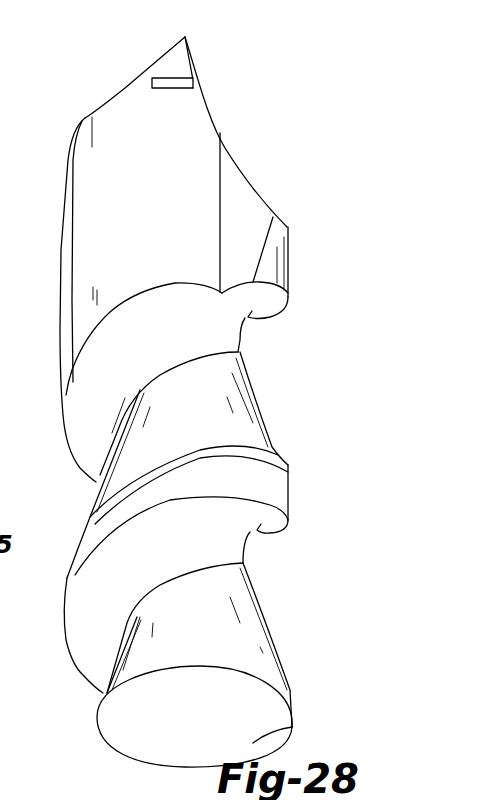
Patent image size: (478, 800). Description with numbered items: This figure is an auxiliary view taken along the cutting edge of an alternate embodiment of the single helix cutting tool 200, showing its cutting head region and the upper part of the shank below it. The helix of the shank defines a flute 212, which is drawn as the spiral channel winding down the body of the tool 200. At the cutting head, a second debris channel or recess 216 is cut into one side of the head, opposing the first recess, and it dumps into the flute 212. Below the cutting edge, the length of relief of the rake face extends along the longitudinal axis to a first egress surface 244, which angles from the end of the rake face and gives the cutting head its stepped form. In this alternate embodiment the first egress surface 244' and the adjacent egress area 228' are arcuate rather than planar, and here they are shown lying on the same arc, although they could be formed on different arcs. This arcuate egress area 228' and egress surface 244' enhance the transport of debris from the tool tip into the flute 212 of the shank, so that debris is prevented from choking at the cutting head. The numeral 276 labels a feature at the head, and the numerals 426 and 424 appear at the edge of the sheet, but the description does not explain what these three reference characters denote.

The single helix cutting tool 200 is at (54, 162).
The flute 212 is at (235, 417).
The second debris channel or recess 216 is at (240, 223).
The egress area 228' is at (262, 132).
The first egress surface 244 is at (254, 48).
The first egress surface 244' is at (241, 68).
The chamfer 276 is at (118, 88).
The element of adjacent figure 426 is at (40, 790).
The element of adjacent figure 424 is at (5, 795).